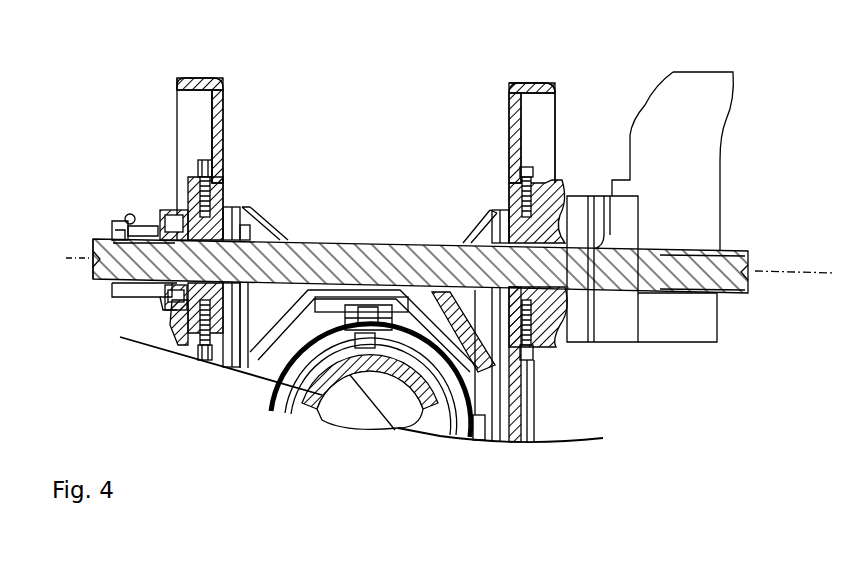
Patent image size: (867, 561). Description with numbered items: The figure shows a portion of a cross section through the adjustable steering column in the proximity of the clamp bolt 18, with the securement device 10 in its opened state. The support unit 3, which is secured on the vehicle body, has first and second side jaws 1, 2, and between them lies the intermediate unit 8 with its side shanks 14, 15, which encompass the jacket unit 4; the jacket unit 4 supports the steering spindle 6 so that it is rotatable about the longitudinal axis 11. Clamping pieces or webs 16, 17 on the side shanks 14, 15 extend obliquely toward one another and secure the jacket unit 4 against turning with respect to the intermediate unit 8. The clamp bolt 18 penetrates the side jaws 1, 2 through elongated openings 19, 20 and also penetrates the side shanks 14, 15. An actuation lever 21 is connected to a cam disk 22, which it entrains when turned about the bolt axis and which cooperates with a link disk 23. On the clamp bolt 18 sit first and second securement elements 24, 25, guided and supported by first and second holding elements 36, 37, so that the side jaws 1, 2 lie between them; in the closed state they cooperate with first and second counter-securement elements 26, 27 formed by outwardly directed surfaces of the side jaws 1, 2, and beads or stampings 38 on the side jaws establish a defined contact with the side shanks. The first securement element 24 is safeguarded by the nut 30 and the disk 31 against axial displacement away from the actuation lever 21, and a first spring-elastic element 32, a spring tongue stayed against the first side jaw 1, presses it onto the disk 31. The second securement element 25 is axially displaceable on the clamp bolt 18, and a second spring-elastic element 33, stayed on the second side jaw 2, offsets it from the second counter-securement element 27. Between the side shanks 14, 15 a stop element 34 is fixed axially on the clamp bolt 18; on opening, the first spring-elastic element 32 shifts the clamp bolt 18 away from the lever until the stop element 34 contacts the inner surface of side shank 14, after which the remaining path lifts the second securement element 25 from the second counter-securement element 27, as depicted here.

The first side jaw 1 is at (224, 110).
The second side jaw 2 is at (537, 83).
The support unit 3 is at (217, 75).
The jacket unit 4 is at (480, 441).
The steering spindle 6 is at (407, 430).
The intermediate unit 8 is at (237, 208).
The securement device 10 is at (731, 307).
The longitudinal axis 11 is at (350, 420).
The first side shank 14 is at (222, 343).
The second side shank 15 is at (498, 444).
The clamping web 16 is at (263, 227).
The clamping web 17 is at (473, 228).
The clamp bolt 18 is at (92, 277).
The opening 19 is at (196, 178).
The opening 20 is at (510, 183).
The actuation lever 21 is at (687, 162).
The cam disk 22 is at (627, 223).
The link disk 23 is at (596, 192).
The first securement element 24 is at (168, 215).
The second securement element 25 is at (556, 165).
The first counter-securement element 26 is at (200, 150).
The second counter-securement element 27 is at (511, 165).
The nut 30 is at (160, 283).
The disk 31 is at (163, 310).
The first spring-elastic element 32 is at (198, 162).
The second spring-elastic element 33 is at (549, 160).
The stop element 34 is at (253, 368).
The first holding element 36 is at (180, 345).
The second holding element 37 is at (548, 345).
The bead 38 is at (227, 207).